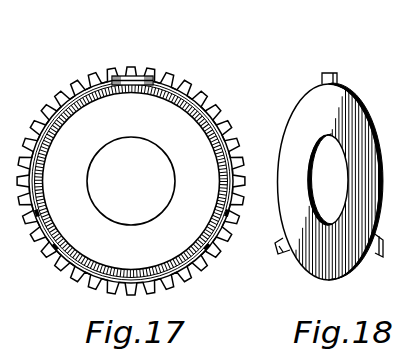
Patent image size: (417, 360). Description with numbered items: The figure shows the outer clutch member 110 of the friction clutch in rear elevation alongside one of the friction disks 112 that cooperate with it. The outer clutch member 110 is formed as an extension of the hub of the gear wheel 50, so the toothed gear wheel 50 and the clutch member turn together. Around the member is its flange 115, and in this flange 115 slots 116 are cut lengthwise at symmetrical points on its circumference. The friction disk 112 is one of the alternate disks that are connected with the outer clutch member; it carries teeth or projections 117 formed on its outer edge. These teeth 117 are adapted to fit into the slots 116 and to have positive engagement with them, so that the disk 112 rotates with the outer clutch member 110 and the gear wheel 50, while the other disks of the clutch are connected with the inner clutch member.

In FIG. 17, the gear wheel 50 is at (207, 258).
In FIG. 17, the outer clutch member 110 is at (124, 131).
In FIG. 17, the flange 115 is at (208, 104).
In FIG. 17, the slots 116 is at (141, 73).
In FIG. 18, the friction disks 112 is at (341, 100).
In FIG. 18, the teeth or projections 117 is at (327, 73).